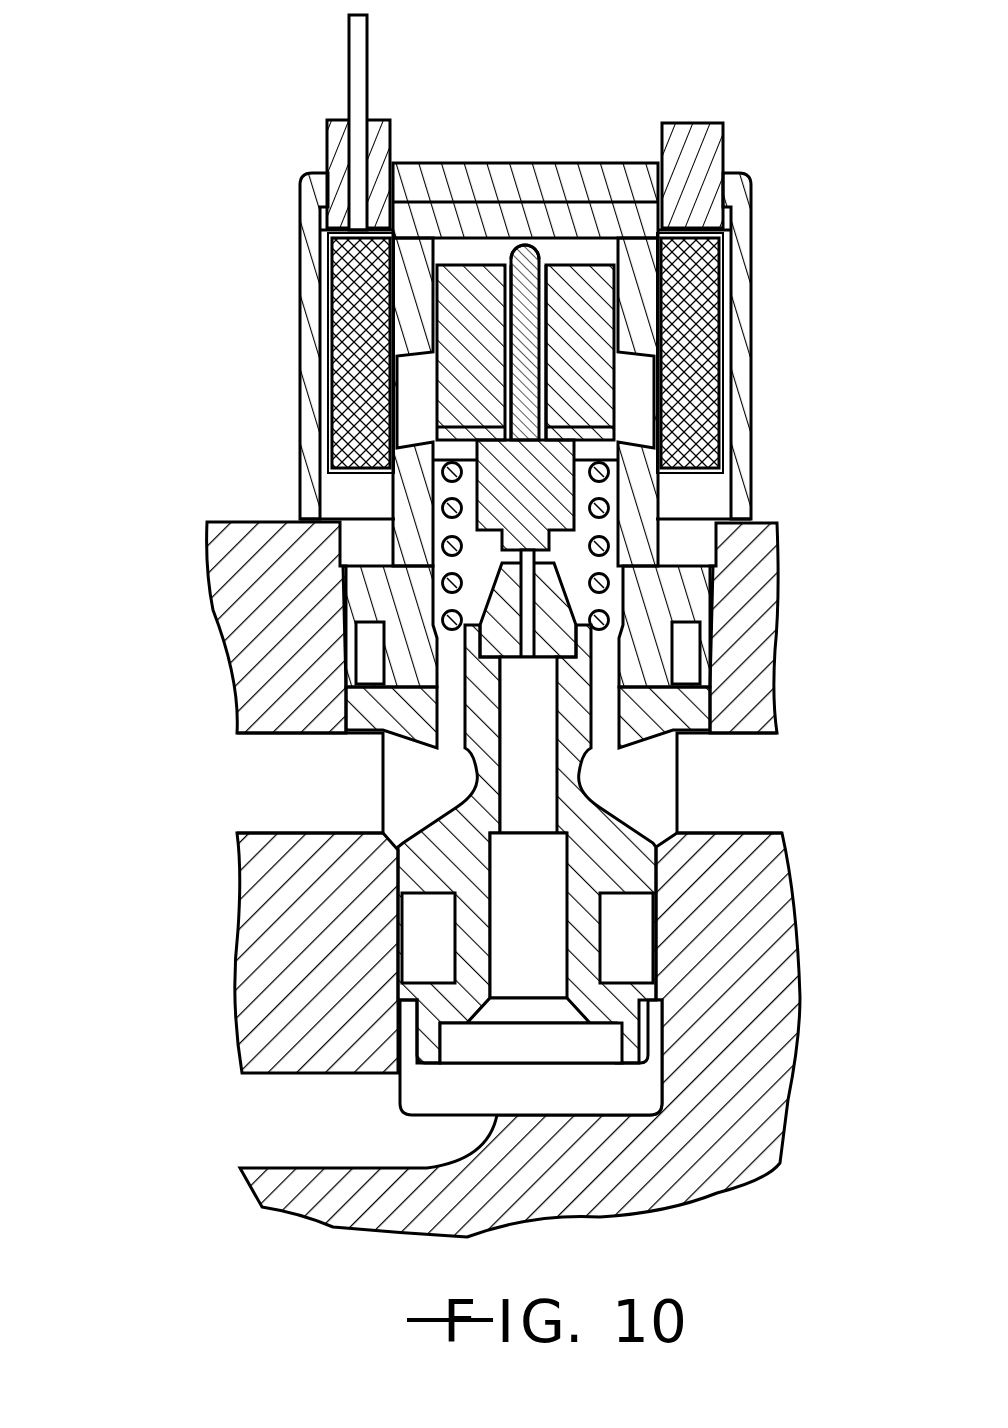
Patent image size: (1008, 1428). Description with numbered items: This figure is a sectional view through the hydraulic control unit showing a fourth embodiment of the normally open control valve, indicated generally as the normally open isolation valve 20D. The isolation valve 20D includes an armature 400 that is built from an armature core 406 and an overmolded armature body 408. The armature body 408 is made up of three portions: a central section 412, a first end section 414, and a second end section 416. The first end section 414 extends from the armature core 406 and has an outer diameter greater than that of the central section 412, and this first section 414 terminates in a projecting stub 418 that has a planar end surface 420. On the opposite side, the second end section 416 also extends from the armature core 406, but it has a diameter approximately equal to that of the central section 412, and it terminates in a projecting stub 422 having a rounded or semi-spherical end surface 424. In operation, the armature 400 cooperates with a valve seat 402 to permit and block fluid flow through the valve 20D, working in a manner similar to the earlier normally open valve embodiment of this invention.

The normally open isolation valve 20D is at (285, 177).
The armature 400 is at (428, 390).
The valve seat 402 is at (397, 888).
The armature core 406 is at (453, 305).
The armature body 408 is at (547, 325).
The central section 412 is at (523, 328).
The first end section 414 is at (480, 488).
The second end section 416 is at (500, 254).
The projecting stub 418 is at (500, 548).
The planar end surface 420 is at (567, 596).
The projecting stub 422 is at (540, 250).
The rounded end surface 424 is at (548, 263).